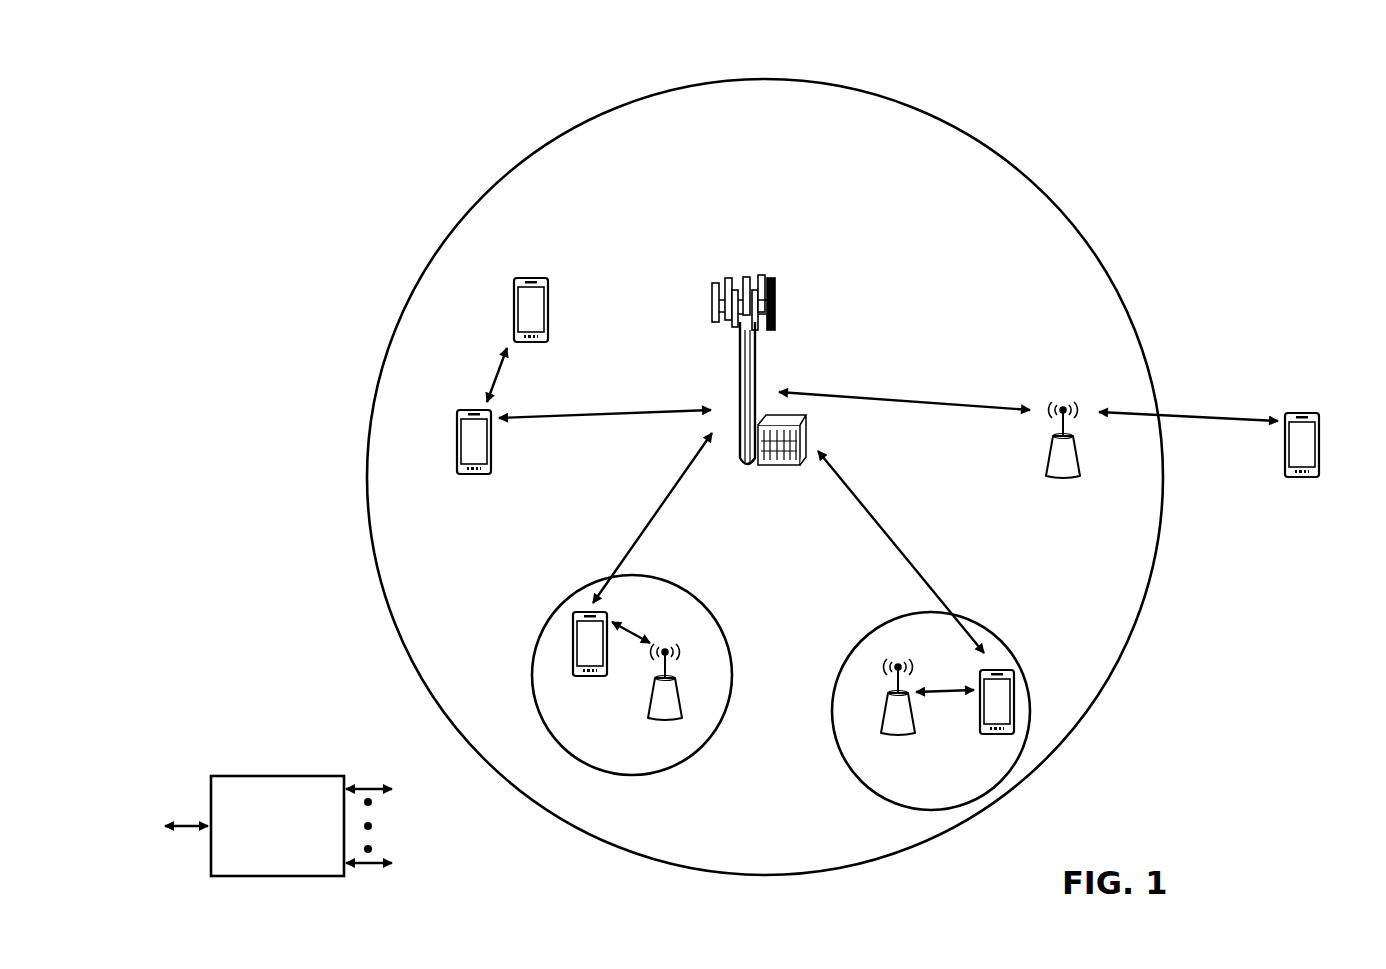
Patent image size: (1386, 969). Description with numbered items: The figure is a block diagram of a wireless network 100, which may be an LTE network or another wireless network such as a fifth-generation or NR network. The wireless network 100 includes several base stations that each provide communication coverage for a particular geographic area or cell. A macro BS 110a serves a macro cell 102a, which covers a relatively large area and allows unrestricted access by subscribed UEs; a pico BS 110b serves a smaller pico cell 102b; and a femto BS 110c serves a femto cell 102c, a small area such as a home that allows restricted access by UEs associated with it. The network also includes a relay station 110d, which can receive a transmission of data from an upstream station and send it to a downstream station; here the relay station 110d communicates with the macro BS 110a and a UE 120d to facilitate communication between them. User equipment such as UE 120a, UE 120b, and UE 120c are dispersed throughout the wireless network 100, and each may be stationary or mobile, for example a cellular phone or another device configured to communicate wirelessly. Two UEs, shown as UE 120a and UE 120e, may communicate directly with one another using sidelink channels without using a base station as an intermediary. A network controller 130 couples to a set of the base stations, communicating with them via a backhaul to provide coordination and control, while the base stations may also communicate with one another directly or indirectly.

The wireless network 100 is at (262, 74).
The macro cell 102a is at (1030, 172).
The pico cell 102b is at (722, 612).
The femto cell 102c is at (862, 622).
The macro BS 110a is at (753, 264).
The pico BS 110b is at (686, 698).
The femto BS 110c is at (882, 716).
The relay station 110d is at (1066, 400).
The UE 120a is at (456, 438).
The UE 120b is at (580, 678).
The UE 120c is at (982, 738).
The UE 120d is at (1316, 410).
The UE 120e is at (513, 300).
The network controller 130 is at (276, 774).